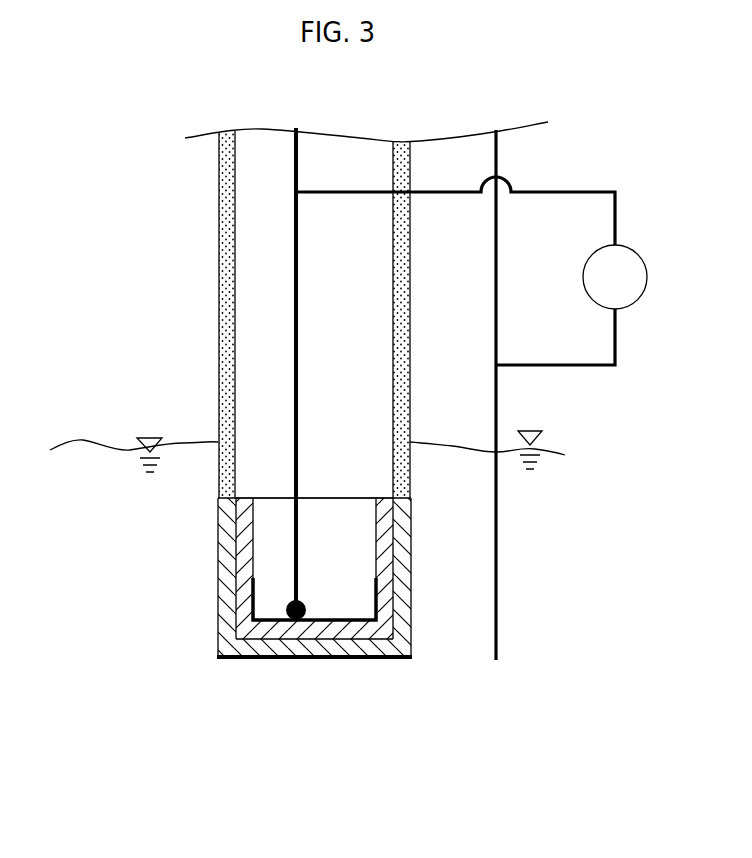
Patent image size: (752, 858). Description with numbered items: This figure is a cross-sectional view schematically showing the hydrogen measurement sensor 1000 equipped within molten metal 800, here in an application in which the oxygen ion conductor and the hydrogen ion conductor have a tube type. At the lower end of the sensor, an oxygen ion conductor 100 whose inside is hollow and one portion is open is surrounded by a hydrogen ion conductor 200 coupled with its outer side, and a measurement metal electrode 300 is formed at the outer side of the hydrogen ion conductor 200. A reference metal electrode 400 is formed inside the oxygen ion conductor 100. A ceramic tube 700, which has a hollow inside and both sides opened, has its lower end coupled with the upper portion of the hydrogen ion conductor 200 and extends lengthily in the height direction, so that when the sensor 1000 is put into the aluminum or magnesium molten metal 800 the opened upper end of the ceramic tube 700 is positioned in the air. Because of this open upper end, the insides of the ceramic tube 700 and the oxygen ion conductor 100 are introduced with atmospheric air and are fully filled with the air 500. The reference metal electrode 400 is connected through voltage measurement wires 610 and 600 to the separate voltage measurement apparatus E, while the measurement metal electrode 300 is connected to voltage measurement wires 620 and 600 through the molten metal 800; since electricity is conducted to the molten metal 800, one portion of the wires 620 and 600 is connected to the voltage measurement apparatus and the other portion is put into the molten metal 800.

The hydrogen measurement sensor 1000 is at (133, 136).
The ceramic tube 700 is at (228, 201).
The molten metal 800 is at (92, 453).
The voltage measurement wire 620 is at (497, 553).
The voltage measurement wires 600 is at (558, 191).
The voltage measurement wire 610 is at (295, 488).
The air 500 is at (319, 567).
The reference metal electrode 400 is at (352, 625).
The oxygen ion conductor 100 is at (283, 628).
The hydrogen ion conductor 200 is at (305, 650).
The measurement metal electrode 300 is at (382, 660).